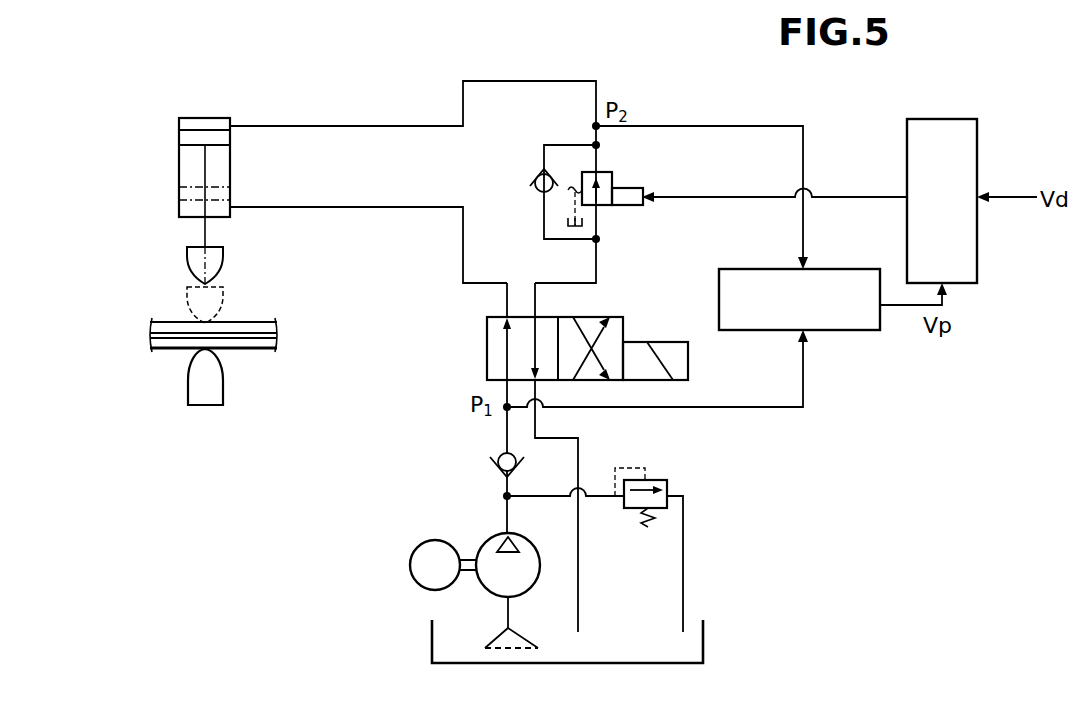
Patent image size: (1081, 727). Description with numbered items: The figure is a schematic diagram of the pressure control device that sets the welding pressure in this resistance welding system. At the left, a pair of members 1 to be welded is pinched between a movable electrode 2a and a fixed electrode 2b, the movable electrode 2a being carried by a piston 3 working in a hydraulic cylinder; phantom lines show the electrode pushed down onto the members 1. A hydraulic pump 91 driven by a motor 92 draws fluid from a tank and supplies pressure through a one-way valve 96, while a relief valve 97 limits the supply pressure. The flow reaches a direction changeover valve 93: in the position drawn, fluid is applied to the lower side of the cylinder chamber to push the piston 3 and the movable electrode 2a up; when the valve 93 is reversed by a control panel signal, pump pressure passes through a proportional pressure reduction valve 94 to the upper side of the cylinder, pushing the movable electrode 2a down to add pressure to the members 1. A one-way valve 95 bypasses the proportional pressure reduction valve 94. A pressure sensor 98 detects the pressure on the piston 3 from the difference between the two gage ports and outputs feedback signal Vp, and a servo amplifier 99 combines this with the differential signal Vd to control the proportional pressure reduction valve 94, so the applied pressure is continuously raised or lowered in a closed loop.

The members 1 is at (248, 322).
The movable electrode 2a is at (223, 257).
The fixed electrode 2b is at (223, 381).
The piston 3 is at (178, 159).
The hydraulic pump 91 is at (538, 547).
The motor 92 is at (448, 540).
The direction changeover valve 93 is at (487, 358).
The proportional pressure reduction valve 94 is at (613, 176).
The one-way valve 95 is at (536, 176).
The one-way valve 96 is at (497, 472).
The relief valve 97 is at (657, 480).
The pressure sensor 98 is at (719, 298).
The servo amplifier 99 is at (940, 118).